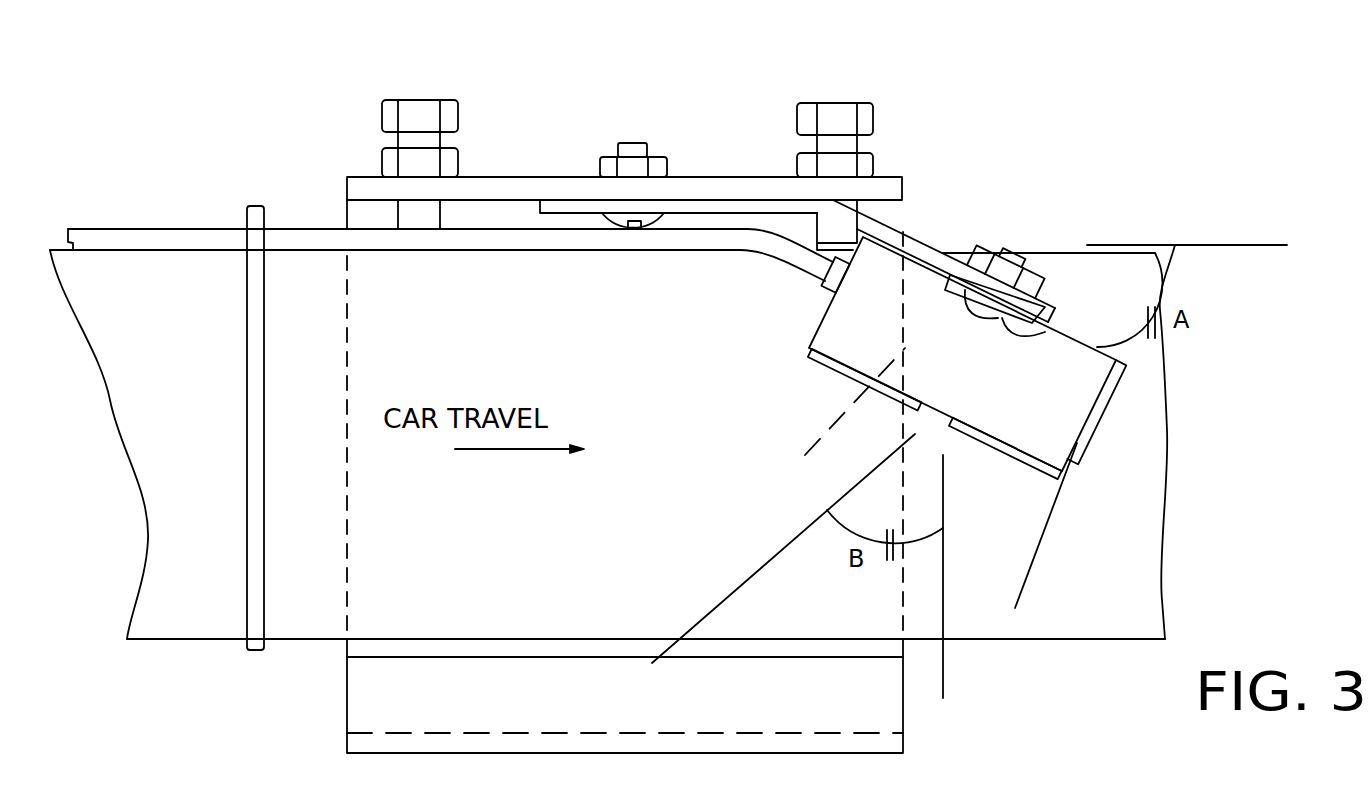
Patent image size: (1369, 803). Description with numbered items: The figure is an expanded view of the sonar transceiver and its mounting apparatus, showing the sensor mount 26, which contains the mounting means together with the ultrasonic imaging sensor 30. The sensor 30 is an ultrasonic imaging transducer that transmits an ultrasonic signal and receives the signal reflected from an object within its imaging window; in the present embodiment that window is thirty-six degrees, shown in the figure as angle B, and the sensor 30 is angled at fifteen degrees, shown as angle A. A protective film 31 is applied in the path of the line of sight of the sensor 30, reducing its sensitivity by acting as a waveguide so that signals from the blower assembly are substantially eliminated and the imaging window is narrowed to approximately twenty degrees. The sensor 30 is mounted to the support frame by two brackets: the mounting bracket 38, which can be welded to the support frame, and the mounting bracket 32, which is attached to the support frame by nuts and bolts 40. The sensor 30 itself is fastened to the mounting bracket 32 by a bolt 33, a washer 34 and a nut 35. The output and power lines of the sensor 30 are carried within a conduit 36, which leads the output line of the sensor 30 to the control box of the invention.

The sensor mount 26 is at (1284, 423).
The ultrasonic imaging sensor 30 is at (1078, 445).
The protective film 31 is at (1100, 427).
The mounting bracket 32 is at (738, 203).
The bolt 33 is at (1000, 320).
The washer 34 is at (950, 255).
The nut 35 is at (985, 248).
The conduit 36 is at (562, 250).
The mounting bracket 38 is at (903, 682).
The nuts and bolts 40 is at (847, 115).